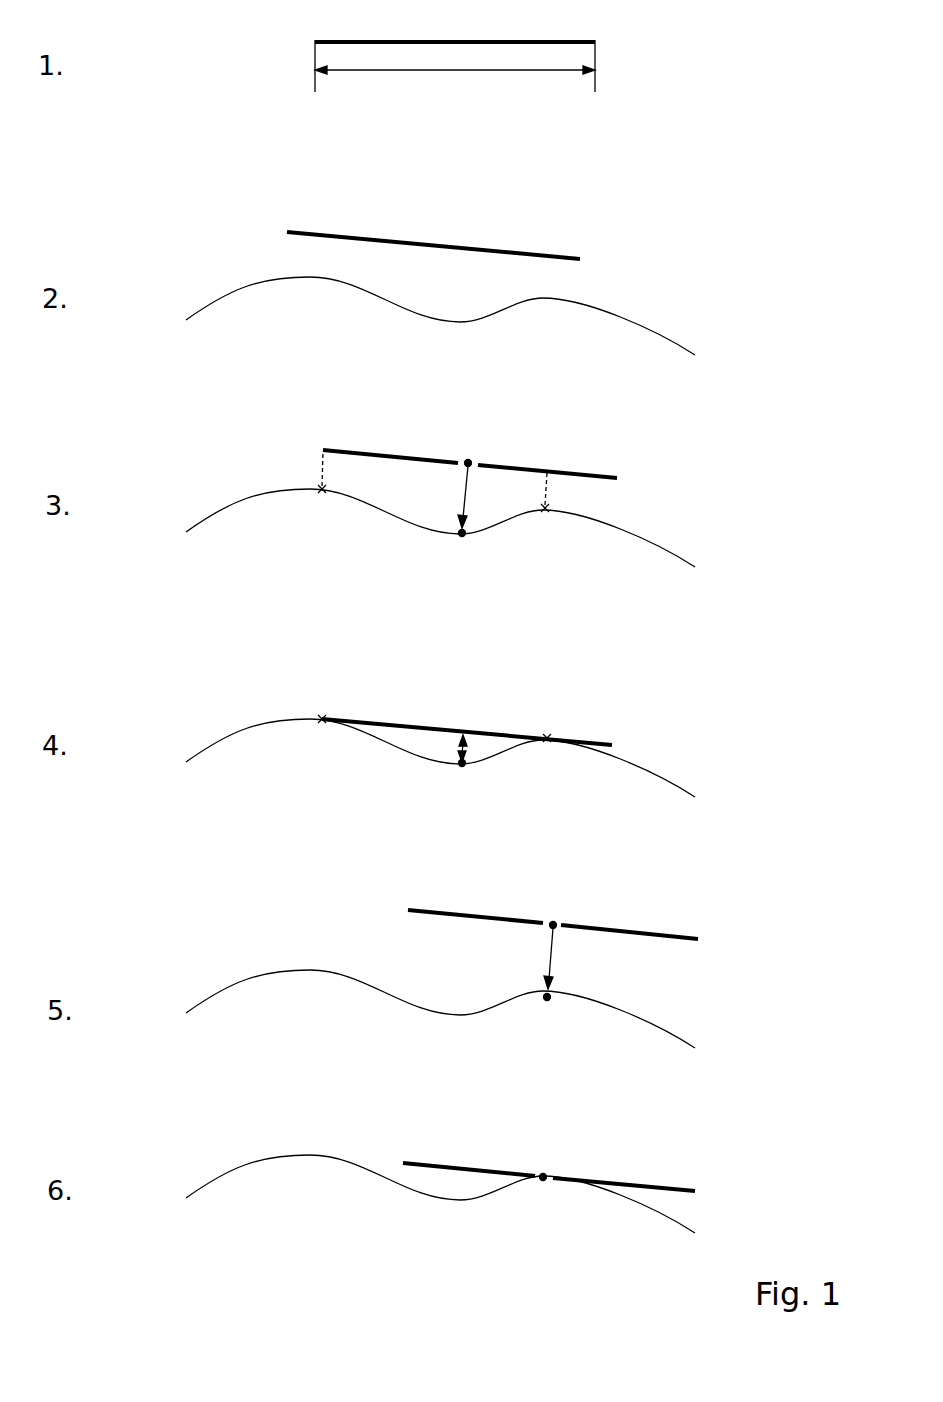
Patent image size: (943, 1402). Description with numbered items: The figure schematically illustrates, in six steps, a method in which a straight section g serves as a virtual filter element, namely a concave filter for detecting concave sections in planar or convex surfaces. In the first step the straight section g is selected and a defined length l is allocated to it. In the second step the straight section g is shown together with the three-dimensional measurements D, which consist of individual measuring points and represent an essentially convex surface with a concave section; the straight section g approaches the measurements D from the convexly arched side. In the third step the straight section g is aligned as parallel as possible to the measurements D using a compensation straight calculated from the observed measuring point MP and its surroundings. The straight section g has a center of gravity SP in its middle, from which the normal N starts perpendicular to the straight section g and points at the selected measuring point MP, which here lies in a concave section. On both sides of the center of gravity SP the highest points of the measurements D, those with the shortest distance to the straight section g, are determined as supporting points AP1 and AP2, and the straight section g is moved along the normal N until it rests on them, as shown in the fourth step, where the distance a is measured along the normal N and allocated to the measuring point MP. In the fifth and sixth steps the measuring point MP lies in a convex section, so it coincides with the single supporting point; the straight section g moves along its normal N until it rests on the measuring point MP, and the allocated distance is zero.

The straight section g is at (468, 42).
The three-dimensional measurements D is at (223, 297).
The defined length l is at (455, 72).
The center of gravity SP is at (480, 459).
The normal N is at (464, 487).
The measuring point MP is at (472, 534).
The first supporting point AP1 is at (322, 493).
The second supporting point AP2 is at (546, 511).
The distance a is at (453, 747).